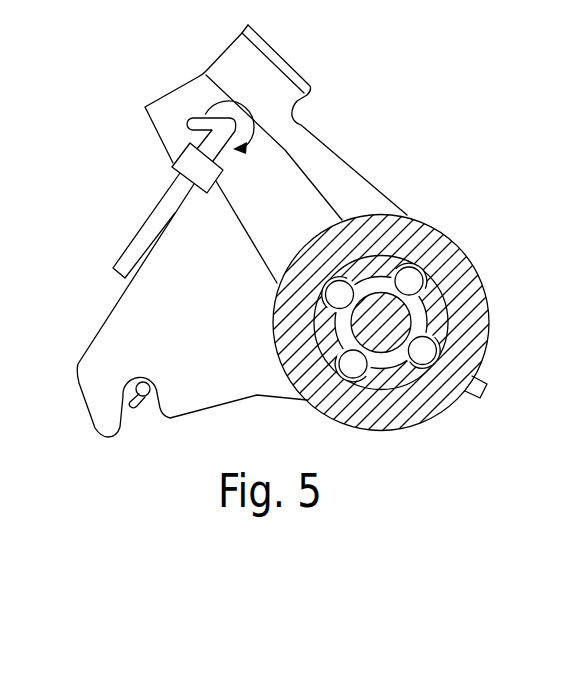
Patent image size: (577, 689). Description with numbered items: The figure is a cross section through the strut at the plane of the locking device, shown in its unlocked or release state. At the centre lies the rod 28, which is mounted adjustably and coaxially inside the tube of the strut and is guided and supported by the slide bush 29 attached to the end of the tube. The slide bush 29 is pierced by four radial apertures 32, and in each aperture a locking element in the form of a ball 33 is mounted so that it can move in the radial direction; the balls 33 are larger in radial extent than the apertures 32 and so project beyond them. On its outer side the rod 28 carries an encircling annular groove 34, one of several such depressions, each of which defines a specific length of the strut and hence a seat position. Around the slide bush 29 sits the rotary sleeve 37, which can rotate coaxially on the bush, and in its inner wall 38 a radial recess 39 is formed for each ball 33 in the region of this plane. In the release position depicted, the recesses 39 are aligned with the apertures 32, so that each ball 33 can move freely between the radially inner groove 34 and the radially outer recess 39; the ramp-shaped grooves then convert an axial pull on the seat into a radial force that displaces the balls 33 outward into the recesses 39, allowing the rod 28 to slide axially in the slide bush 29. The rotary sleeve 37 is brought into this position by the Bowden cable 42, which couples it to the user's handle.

The rod 28 is at (380, 342).
The slide bush 29 is at (423, 373).
The radial apertures 32 is at (409, 275).
The ball 33 is at (348, 277).
The radial depression 34 is at (389, 365).
The rotary sleeve 37 is at (474, 360).
The inner wall 38 is at (467, 262).
The radial recess 39 is at (432, 274).
The Bowden cable 42 is at (247, 147).